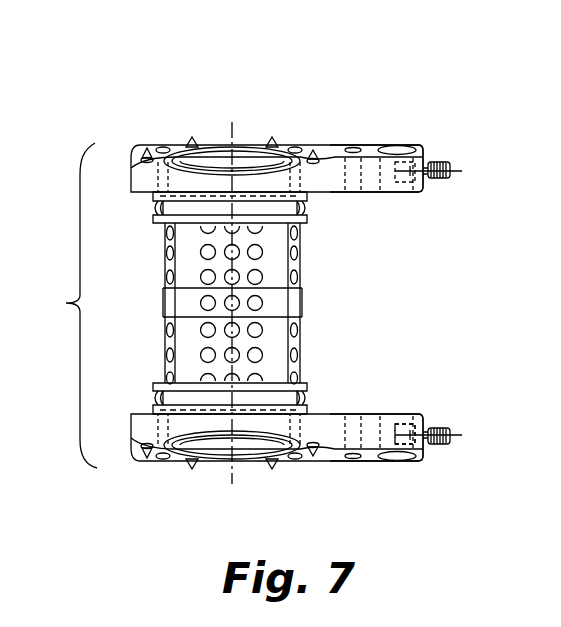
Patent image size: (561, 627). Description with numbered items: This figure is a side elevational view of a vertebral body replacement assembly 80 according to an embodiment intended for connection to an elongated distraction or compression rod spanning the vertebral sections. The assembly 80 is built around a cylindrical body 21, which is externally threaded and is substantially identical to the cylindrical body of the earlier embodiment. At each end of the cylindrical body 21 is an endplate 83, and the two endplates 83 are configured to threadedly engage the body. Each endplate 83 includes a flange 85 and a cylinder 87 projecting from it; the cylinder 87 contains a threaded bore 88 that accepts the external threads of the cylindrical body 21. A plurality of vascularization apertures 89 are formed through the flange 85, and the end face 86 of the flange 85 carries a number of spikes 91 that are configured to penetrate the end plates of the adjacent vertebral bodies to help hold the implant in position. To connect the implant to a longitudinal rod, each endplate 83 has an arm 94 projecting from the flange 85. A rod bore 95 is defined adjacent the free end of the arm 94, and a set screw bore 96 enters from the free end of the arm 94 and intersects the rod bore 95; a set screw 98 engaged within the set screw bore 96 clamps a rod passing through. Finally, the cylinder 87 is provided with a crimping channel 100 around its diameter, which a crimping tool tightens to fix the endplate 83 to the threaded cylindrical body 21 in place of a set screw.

The vertebral body replacement assembly 80 is at (66, 303).
The cylindrical body 21 is at (303, 283).
The endplate 83 is at (348, 146).
The flange 85 is at (152, 195).
The end face 86 is at (333, 146).
The cylinder 87 is at (306, 208).
The threaded bore 88 is at (215, 157).
The vascularization apertures 89 is at (355, 430).
The spikes 91 is at (147, 147).
The arm 94 is at (410, 193).
The rod bore 95 is at (396, 147).
The set screw bore 96 is at (431, 433).
The set screw 98 is at (445, 162).
The crimping channel 100 is at (156, 212).